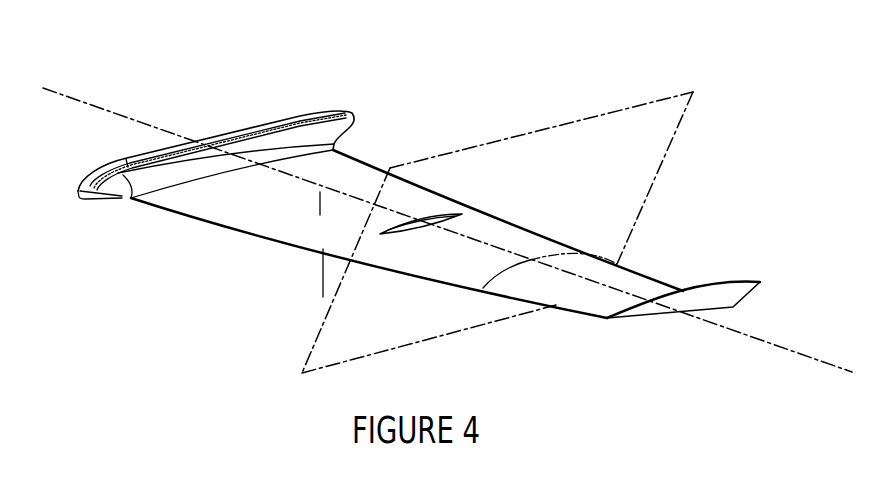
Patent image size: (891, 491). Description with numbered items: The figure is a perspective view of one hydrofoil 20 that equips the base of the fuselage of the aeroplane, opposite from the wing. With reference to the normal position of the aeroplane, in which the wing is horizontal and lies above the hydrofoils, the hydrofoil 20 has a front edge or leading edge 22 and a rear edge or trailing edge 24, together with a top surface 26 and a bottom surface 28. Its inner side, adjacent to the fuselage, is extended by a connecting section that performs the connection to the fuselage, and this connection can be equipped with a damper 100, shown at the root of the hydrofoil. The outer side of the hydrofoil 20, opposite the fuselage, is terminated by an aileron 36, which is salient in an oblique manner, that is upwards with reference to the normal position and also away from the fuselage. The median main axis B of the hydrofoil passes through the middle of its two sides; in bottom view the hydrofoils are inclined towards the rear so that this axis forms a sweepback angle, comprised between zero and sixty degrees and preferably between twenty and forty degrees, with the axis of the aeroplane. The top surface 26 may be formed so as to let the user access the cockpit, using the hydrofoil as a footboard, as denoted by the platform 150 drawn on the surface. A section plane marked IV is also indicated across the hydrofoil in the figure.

The damper 100 is at (248, 103).
The platform 150 is at (419, 213).
The hydrofoil 20 is at (533, 97).
The leading edge 22 is at (302, 248).
The trailing edge 24 is at (500, 220).
The top surface 26 is at (320, 192).
The bottom surface 28 is at (323, 297).
The aileron 36 is at (722, 295).
The section line IV is at (670, 150).
The median main axis B is at (793, 348).